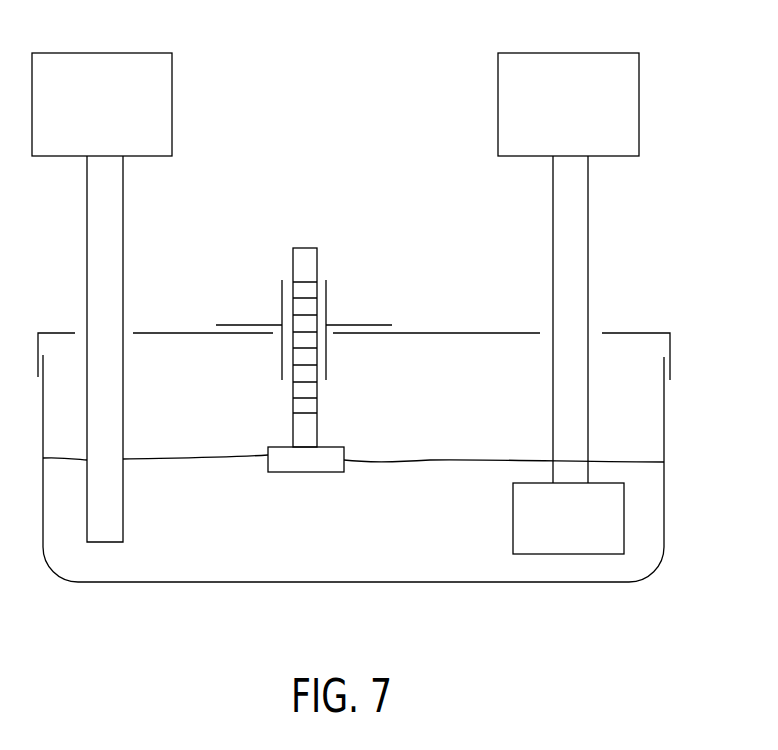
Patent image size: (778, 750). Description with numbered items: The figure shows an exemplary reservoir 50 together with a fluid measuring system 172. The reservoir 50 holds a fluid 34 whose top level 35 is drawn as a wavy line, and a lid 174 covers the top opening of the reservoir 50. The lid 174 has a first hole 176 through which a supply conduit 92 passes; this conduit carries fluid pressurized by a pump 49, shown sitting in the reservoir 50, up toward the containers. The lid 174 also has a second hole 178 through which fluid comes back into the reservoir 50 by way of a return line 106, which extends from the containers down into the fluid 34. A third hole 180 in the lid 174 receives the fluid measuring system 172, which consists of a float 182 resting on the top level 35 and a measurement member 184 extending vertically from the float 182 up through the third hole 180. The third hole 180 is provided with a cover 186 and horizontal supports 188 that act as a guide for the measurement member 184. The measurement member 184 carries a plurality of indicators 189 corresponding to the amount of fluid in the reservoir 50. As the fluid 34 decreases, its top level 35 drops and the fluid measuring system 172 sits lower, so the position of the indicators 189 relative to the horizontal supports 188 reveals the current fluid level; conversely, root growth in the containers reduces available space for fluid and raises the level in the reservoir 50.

The fluid 34 is at (358, 536).
The top level 35 is at (432, 459).
The pump 49 is at (624, 520).
The reservoir 50 is at (678, 410).
The supply conduit 92 is at (588, 226).
The return line 106 is at (123, 242).
The fluid measuring system 172 is at (309, 307).
The lid 174 is at (643, 333).
The first hole 176 is at (596, 318).
The second hole 178 is at (127, 333).
The third hole 180 is at (333, 335).
The float 182 is at (335, 446).
The measurement member 184 is at (302, 243).
The cover 186 is at (368, 323).
The horizontal supports 188 is at (281, 305).
The indicators 189 is at (307, 413).